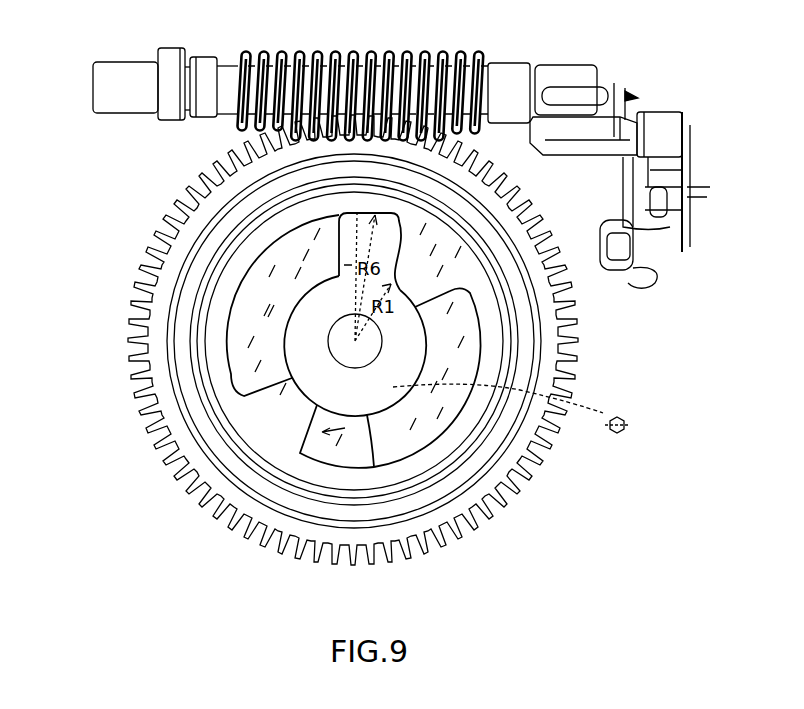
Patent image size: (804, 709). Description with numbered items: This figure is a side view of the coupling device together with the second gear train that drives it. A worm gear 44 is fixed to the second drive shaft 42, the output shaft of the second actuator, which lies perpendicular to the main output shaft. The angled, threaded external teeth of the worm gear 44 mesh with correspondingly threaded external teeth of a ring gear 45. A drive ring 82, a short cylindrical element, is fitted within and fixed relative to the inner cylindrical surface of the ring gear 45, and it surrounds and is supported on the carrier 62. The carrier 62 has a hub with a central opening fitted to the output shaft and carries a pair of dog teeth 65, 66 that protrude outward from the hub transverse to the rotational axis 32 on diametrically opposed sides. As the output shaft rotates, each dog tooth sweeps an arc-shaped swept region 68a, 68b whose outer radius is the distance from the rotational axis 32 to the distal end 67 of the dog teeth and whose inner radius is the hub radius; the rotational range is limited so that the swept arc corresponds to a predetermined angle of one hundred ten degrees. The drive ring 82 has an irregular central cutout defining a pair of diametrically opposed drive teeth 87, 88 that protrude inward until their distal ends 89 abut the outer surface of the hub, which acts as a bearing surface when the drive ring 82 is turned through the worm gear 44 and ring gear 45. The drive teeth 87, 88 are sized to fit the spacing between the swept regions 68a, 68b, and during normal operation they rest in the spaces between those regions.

The rotational axis 32 is at (362, 334).
The second drive shaft 42 is at (507, 73).
The worm gear 44 is at (331, 58).
The ring gear 45 is at (190, 457).
The carrier 62 is at (490, 500).
The first dog tooth 65 is at (400, 217).
The second dog tooth 66 is at (395, 400).
The distal end 67 is at (325, 415).
The swept region of the first dog tooth 68a is at (150, 271).
The swept region of the second dog tooth 68b is at (466, 540).
The drive ring 82 is at (215, 378).
The first drive tooth 87 is at (430, 267).
The second drive tooth 88 is at (292, 413).
The distal ends 89 is at (285, 372).